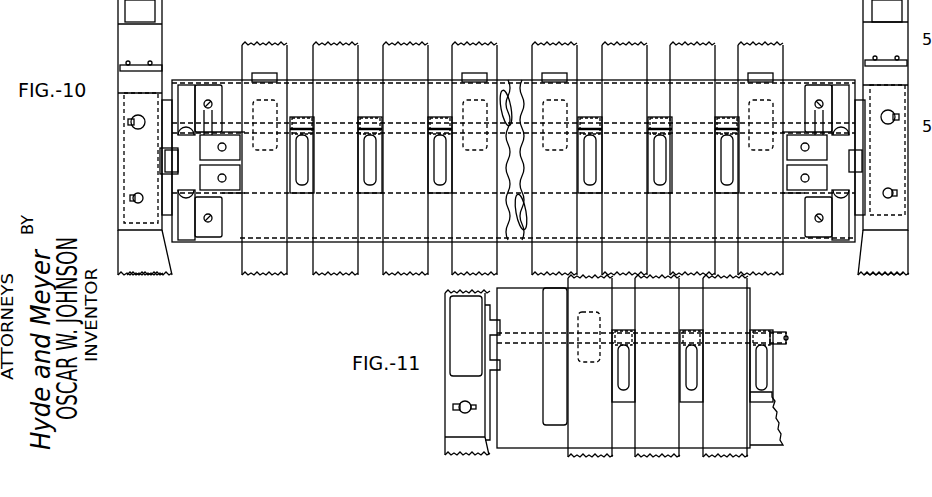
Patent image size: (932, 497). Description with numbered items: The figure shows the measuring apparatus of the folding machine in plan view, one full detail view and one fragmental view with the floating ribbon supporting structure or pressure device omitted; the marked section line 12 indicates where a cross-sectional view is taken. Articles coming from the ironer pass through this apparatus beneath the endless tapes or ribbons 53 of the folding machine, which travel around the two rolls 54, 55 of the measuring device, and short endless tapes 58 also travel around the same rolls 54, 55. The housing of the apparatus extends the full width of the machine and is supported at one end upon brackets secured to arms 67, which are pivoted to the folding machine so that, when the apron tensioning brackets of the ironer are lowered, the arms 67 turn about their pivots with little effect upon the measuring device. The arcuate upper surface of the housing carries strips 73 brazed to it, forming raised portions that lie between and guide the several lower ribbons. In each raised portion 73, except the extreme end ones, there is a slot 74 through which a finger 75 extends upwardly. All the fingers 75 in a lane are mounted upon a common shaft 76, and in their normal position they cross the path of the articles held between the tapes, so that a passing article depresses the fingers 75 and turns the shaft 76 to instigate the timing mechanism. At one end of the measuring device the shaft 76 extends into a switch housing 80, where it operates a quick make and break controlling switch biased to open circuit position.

In FIG. 10, the section line / stripper plate 12 is at (310, 45).
In FIG. 10, the endless tapes or ribbons 53 is at (553, 82).
In FIG. 10, the roll 54 is at (372, 232).
In FIG. 10, the roll 55 is at (370, 85).
In FIG. 10, the short endless tapes 58 is at (415, 85).
In FIG. 10, the arms 67 is at (167, 275).
In FIG. 11, the strips 73 is at (553, 308).
In FIG. 11, the slot 74 is at (688, 397).
In FIG. 10, the fingers 75 is at (372, 168).
In FIG. 11, the fingers 75 is at (697, 378).
In FIG. 10, the shaft 76 is at (172, 130).
In FIG. 11, the shaft 76 is at (787, 334).
In FIG. 10, the switch housing 80 is at (120, 170).